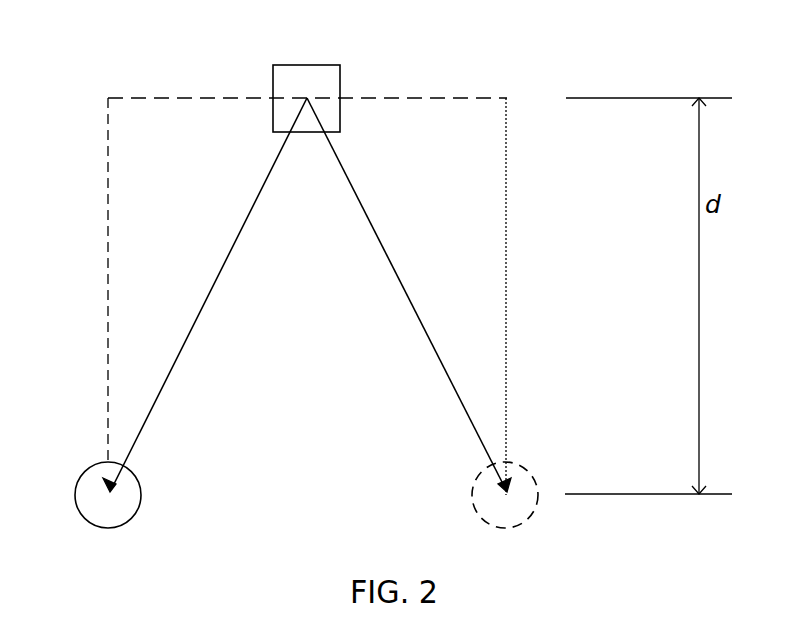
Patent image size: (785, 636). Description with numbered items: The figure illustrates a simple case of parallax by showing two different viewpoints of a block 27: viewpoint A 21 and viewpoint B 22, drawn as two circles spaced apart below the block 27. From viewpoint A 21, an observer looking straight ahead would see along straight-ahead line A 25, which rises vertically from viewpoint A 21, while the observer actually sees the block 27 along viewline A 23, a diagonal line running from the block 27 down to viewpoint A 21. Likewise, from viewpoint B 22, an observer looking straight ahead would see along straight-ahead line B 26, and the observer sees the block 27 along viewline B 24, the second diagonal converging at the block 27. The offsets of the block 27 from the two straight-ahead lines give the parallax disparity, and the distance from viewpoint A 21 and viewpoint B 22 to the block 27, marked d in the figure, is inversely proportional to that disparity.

The viewpoint A 21 is at (109, 495).
The viewpoint B 22 is at (505, 495).
The viewline A 23 is at (190, 335).
The viewline B 24 is at (400, 285).
The straight-ahead line A 25 is at (108, 160).
The straight-ahead line B 26 is at (605, 230).
The block 27 is at (312, 95).